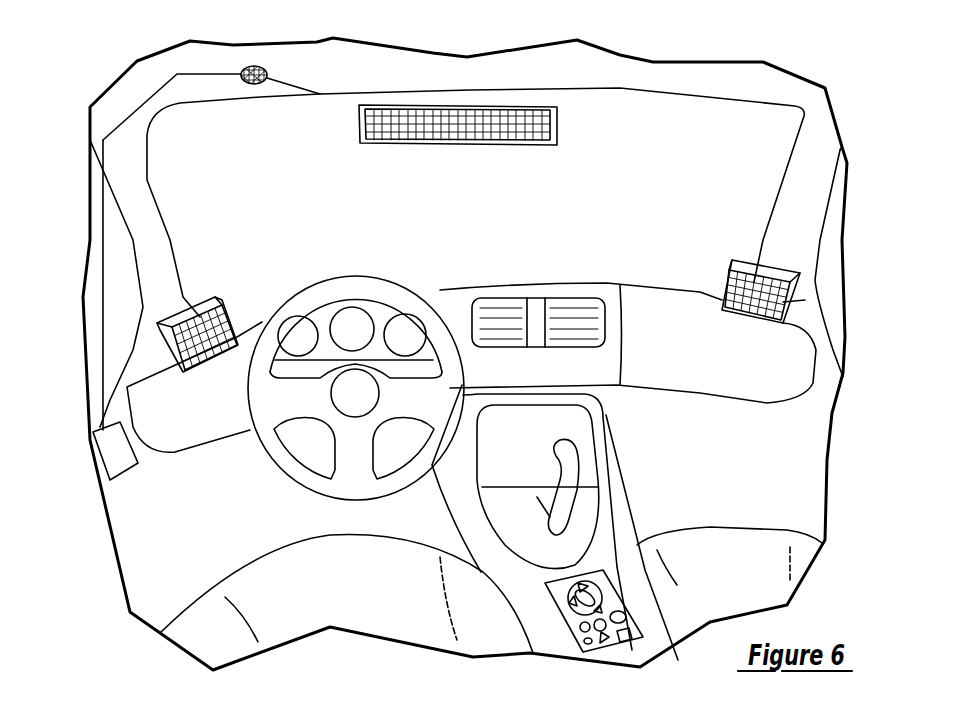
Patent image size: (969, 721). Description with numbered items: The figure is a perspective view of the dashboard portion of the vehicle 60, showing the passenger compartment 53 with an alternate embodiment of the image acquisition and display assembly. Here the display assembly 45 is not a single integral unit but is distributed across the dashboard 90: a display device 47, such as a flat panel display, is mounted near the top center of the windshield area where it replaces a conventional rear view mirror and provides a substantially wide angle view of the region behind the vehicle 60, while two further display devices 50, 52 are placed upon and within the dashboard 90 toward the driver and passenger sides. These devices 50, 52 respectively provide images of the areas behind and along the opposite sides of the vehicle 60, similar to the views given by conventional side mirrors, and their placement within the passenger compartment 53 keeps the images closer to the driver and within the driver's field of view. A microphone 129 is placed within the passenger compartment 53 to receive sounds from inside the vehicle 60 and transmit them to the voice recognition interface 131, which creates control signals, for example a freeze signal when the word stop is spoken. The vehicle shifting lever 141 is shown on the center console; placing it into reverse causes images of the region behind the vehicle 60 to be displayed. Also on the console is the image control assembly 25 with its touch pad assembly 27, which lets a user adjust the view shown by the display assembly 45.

The microphone 129 is at (256, 64).
The display device 47 is at (505, 118).
The display assembly 45 is at (822, 80).
The vehicle 60 is at (822, 140).
The dashboard 90 is at (657, 284).
The display device 52 is at (777, 298).
The display device 50 is at (212, 330).
The voice recognition interface 131 is at (117, 454).
The passenger compartment 53 is at (198, 538).
The vehicle shifting lever 141 is at (570, 453).
The image control assembly 25 is at (617, 582).
The touch pad assembly 27 is at (367, 720).